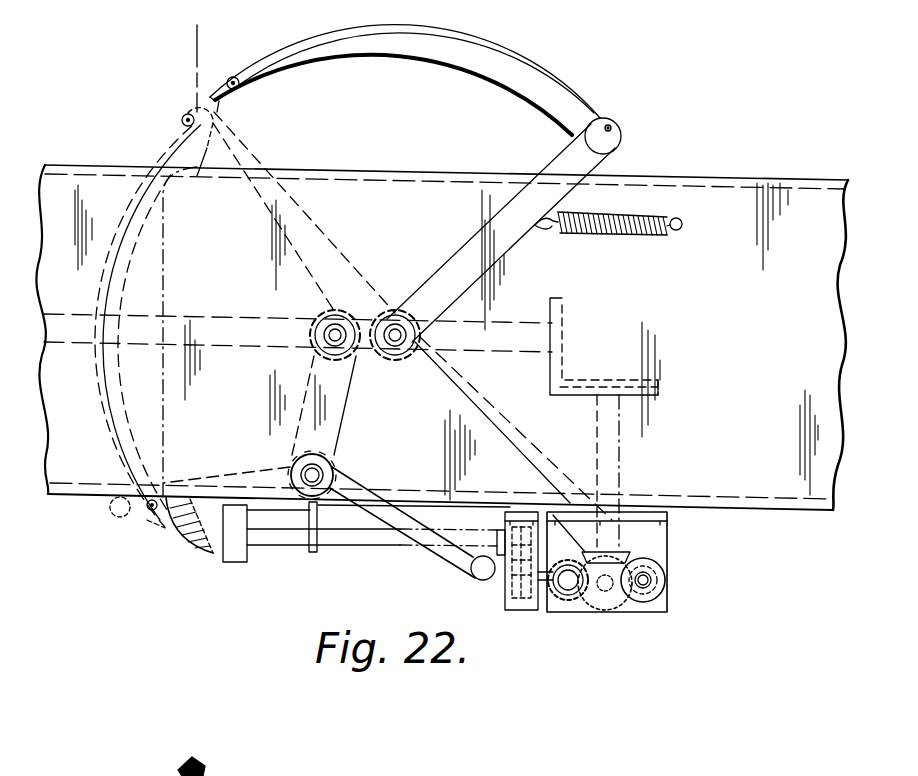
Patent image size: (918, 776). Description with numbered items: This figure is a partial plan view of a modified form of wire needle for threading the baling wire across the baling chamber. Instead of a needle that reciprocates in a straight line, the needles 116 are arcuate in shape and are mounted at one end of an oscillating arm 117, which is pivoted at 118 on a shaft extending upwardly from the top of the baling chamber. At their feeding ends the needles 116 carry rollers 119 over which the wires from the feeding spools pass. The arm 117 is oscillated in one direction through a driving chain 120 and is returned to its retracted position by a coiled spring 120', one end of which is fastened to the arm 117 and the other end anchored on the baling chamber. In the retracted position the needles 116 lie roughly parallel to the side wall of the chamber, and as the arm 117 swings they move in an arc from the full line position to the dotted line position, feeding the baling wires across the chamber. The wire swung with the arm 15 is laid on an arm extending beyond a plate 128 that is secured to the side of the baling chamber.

The arm 15 is at (441, 548).
The needles 116 is at (238, 88).
The oscillating arm 117 is at (593, 162).
The pivot 118 is at (394, 347).
The rollers 119 is at (239, 88).
The driving chain 120 is at (513, 444).
The coiled spring 120' is at (616, 249).
The plate 128 is at (212, 527).